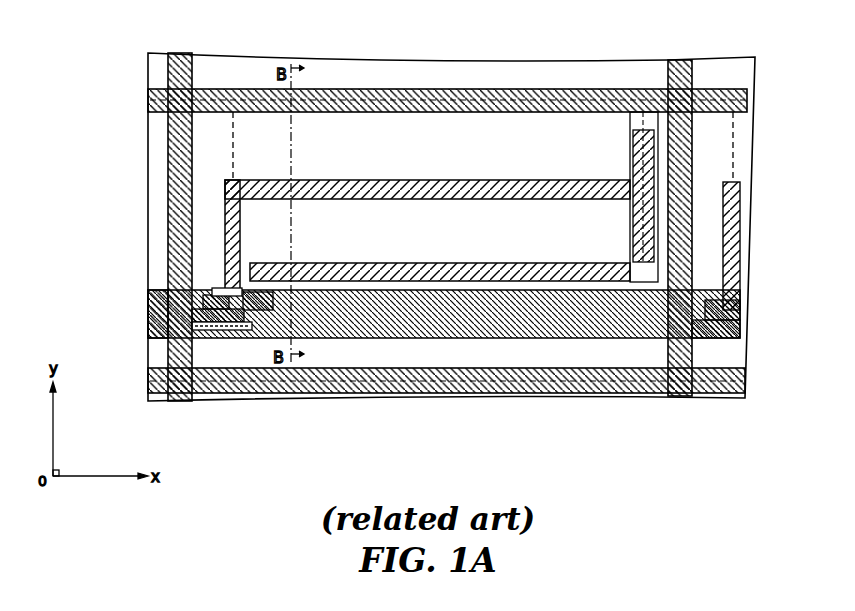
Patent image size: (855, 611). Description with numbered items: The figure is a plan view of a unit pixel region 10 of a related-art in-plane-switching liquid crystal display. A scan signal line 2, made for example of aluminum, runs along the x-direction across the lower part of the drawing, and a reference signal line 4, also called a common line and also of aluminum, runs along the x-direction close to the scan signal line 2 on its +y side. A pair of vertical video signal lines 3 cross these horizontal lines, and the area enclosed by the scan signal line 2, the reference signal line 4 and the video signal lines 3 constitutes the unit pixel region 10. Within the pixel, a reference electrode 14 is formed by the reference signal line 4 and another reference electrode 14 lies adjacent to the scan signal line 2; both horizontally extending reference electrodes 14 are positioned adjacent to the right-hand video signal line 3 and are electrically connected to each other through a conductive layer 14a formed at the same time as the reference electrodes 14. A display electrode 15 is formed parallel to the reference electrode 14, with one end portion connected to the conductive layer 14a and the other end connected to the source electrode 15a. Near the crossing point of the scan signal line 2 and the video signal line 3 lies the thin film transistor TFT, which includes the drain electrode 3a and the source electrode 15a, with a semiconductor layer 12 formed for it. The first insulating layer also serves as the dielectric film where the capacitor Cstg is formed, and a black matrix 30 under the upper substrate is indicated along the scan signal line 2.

The unit pixel region 10 is at (622, 50).
The scan signal line 2 is at (572, 327).
The video signal line 3 is at (168, 157).
The drain electrode 3a is at (300, 332).
The reference signal line 4 is at (556, 92).
The semiconductor layer 12 is at (160, 305).
The reference electrode 14 is at (413, 266).
The conductive layer 14a is at (741, 225).
The display electrode 15 is at (385, 181).
The source electrode 15a is at (218, 290).
The black matrix 30 is at (490, 330).
The thin film transistor TFT is at (213, 346).
The capacitor Cstg is at (760, 230).